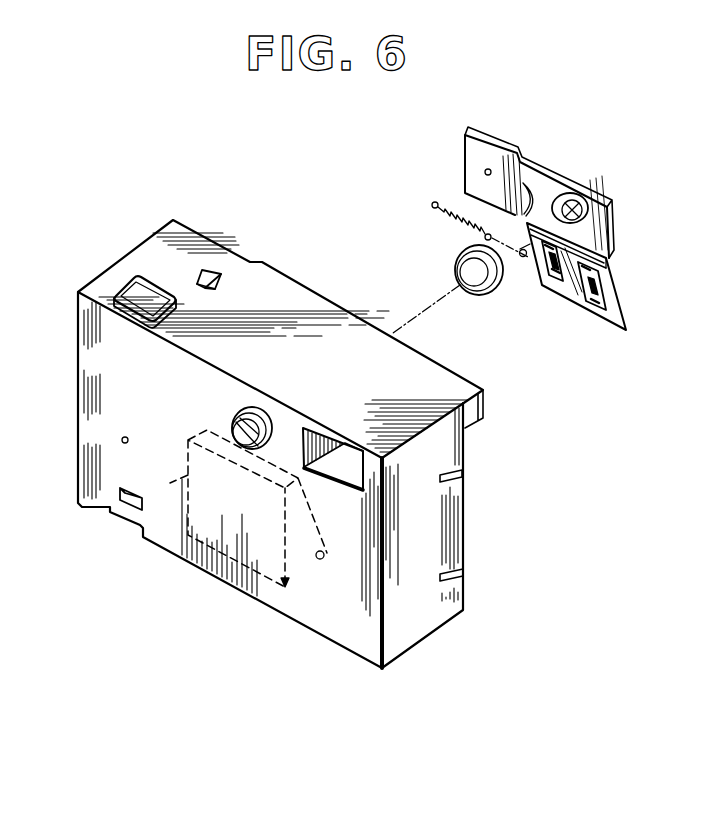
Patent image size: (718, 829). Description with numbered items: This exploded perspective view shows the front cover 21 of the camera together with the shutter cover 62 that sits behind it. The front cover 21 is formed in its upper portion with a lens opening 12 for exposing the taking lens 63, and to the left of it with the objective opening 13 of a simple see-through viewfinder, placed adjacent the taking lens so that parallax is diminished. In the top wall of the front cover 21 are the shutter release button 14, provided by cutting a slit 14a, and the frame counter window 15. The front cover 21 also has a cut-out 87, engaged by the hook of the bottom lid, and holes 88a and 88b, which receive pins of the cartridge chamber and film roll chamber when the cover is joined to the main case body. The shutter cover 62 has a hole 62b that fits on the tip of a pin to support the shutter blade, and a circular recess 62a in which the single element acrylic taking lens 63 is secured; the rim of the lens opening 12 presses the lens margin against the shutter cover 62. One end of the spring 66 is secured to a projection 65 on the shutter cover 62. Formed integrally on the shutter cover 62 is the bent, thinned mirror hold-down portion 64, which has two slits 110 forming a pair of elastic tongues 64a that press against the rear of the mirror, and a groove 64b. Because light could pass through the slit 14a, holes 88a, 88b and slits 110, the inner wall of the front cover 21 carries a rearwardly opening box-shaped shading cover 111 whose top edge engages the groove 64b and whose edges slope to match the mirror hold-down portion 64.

The front cover 21 is at (472, 525).
The lens opening 12 is at (236, 416).
The objective opening 13 is at (340, 456).
The shutter release button 14 is at (137, 277).
The slit 14a is at (121, 324).
The frame counter window 15 is at (211, 270).
The shutter cover 62 is at (580, 170).
The circular recess 62a is at (565, 197).
The hole 62b is at (484, 172).
The taking lens 63 is at (456, 274).
The mirror hold-down portion 64 is at (624, 333).
The tongues 64a is at (540, 272).
The groove 64b is at (606, 258).
The projection 65 is at (521, 260).
The spring 66 is at (440, 222).
The cut-out 87 is at (138, 491).
The hole 88a is at (124, 436).
The hole 88b is at (322, 560).
The slits 110 is at (549, 282).
The shading cover 111 is at (216, 576).